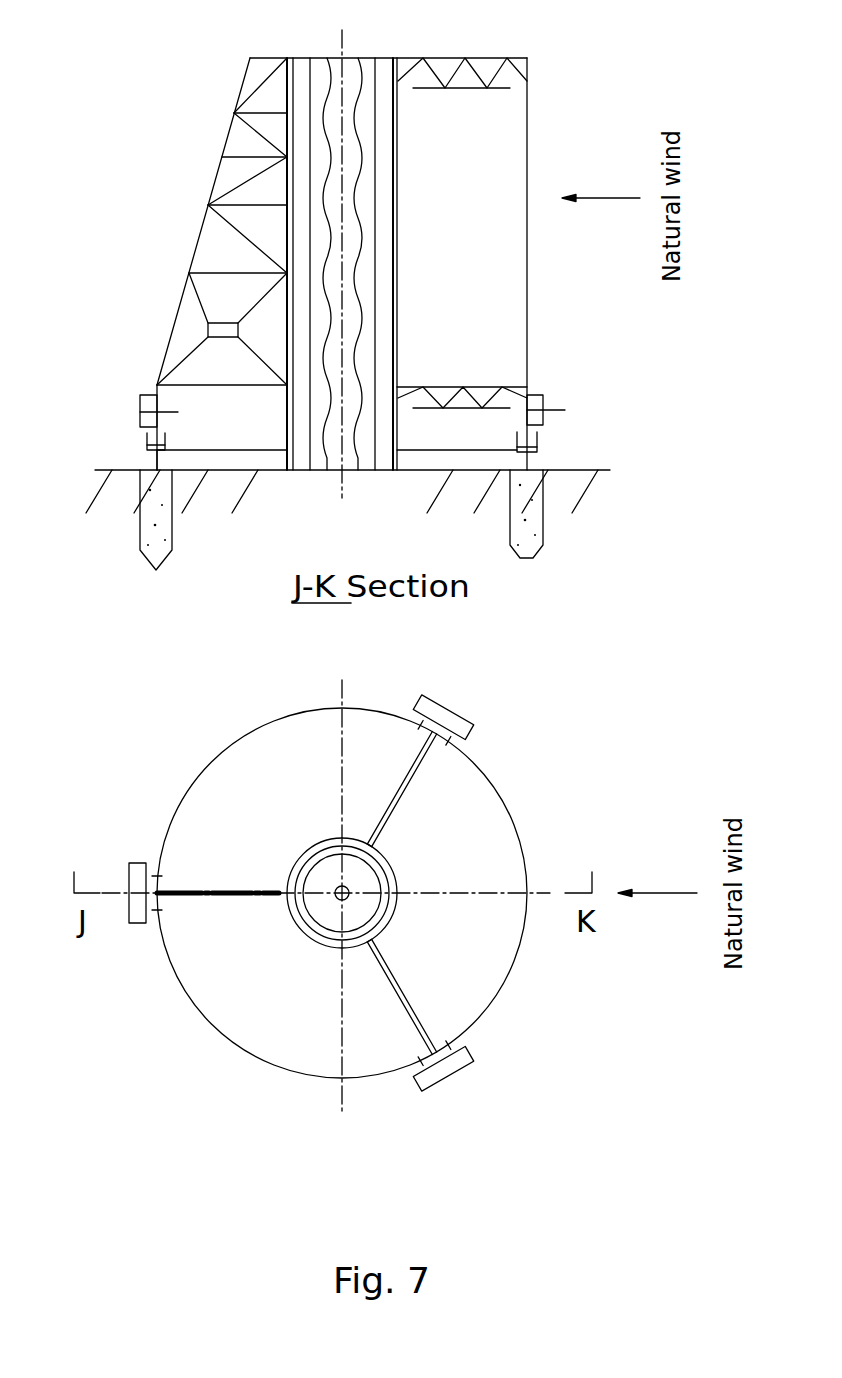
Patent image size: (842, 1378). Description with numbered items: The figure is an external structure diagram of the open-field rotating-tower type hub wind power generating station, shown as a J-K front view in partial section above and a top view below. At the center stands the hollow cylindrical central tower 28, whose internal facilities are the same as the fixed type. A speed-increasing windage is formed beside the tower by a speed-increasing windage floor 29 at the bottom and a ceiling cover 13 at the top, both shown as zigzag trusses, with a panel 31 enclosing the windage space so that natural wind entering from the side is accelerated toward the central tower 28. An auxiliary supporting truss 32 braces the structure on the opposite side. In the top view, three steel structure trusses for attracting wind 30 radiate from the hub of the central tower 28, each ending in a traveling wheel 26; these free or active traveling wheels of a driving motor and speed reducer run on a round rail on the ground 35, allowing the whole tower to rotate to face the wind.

The ceiling cover 13 is at (440, 72).
The traveling wheel 26 is at (142, 410).
The central tower 28 is at (353, 440).
The speed-increasing windage floor 29 is at (502, 387).
The steel structure truss for attracting wind 30 is at (412, 760).
The panel 31 is at (505, 163).
The auxiliary supporting truss 32 is at (223, 195).
The round rail on the ground 35 is at (155, 463).